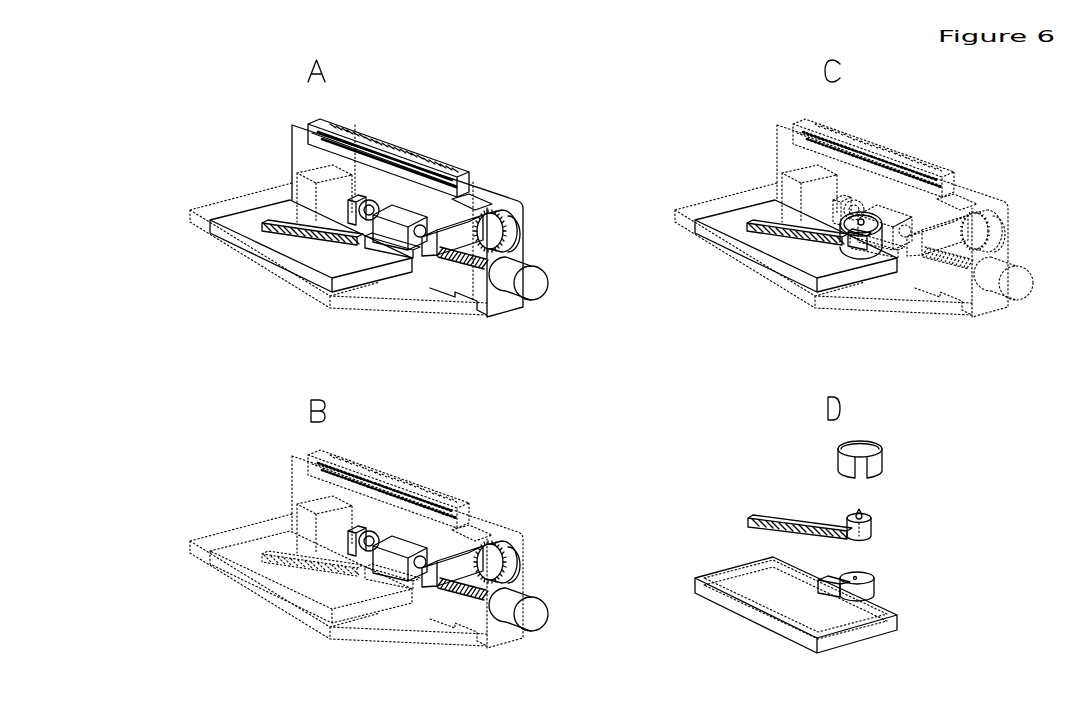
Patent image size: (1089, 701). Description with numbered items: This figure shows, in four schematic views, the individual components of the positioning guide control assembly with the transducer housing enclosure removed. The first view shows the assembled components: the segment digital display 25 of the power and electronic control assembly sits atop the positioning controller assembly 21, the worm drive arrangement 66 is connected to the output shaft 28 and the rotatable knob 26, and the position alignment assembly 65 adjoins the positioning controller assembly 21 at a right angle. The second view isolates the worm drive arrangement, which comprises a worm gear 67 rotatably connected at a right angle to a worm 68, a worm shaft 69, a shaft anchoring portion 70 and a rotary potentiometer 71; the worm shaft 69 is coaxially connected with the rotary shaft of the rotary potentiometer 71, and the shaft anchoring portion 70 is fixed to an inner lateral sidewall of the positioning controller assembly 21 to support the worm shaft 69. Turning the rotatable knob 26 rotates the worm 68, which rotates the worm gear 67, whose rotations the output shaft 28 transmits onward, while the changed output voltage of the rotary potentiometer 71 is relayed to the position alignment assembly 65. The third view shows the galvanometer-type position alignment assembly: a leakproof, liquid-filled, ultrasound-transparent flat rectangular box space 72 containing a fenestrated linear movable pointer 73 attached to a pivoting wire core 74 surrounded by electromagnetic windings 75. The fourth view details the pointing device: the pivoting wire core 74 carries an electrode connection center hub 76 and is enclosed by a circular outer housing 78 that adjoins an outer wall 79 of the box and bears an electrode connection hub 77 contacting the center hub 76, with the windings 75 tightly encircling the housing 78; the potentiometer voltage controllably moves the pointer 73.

The positioning controller assembly 21 is at (437, 167).
The segment digital display 25 is at (365, 133).
The rotatable knob 26 is at (525, 259).
The output shaft 28 is at (430, 254).
The position alignment assembly 65 is at (239, 212).
The worm drive arrangement 66 is at (504, 206).
The worm gear 67 is at (501, 543).
The worm 68 is at (450, 615).
The worm shaft 69 is at (457, 536).
The shaft anchoring portion 70 is at (417, 527).
The rotary potentiometer 71 is at (392, 507).
The flat rectangular box space 72 is at (787, 238).
The linear movable pointer 73 is at (776, 211).
The pivoting wire core 74 is at (848, 236).
The electromagnetic windings 75 is at (870, 238).
The electrode connection center hub 76 is at (862, 516).
The electrode connection hub 77 is at (857, 576).
The circular outer housing 78 is at (873, 583).
The outer wall 79 is at (870, 607).